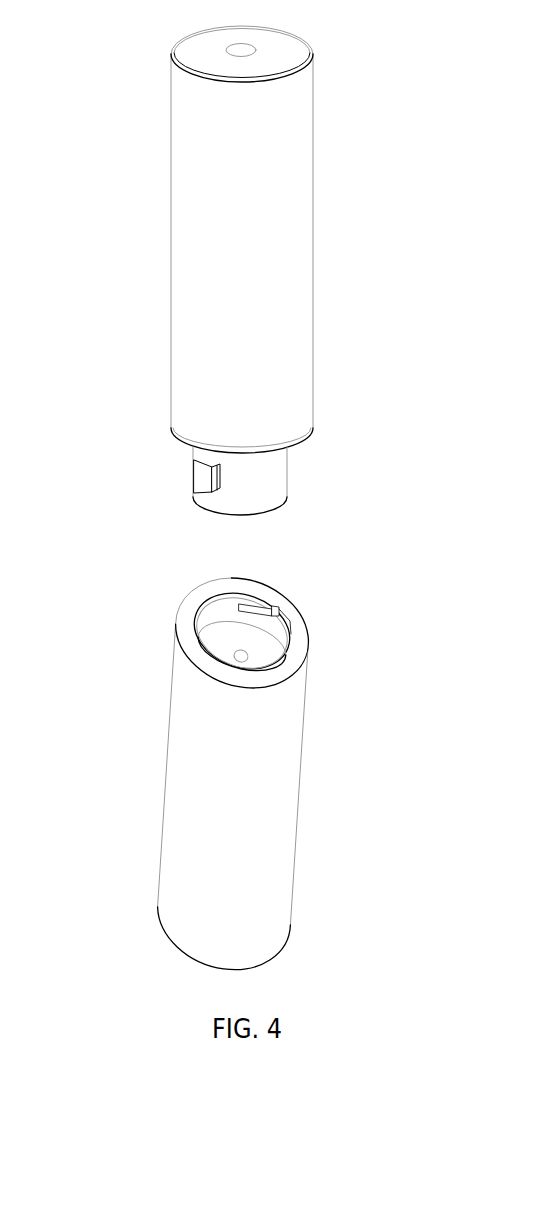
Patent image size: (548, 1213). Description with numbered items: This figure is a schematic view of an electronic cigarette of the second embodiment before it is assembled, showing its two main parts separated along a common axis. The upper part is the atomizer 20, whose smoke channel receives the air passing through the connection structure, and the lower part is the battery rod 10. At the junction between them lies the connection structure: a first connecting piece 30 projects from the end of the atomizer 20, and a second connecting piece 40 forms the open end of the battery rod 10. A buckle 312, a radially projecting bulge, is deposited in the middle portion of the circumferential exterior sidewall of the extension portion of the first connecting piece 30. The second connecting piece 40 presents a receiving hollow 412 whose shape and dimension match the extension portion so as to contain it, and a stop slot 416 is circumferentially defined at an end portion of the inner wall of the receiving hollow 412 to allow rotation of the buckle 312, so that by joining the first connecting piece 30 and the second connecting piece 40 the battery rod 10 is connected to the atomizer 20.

The battery rod 10 is at (320, 785).
The atomizer 20 is at (337, 247).
The first connecting piece 30 is at (267, 484).
The buckle 312 is at (205, 473).
The second connecting piece 40 is at (283, 672).
The receiving hollow 412 is at (292, 627).
The stop slot 416 is at (213, 612).